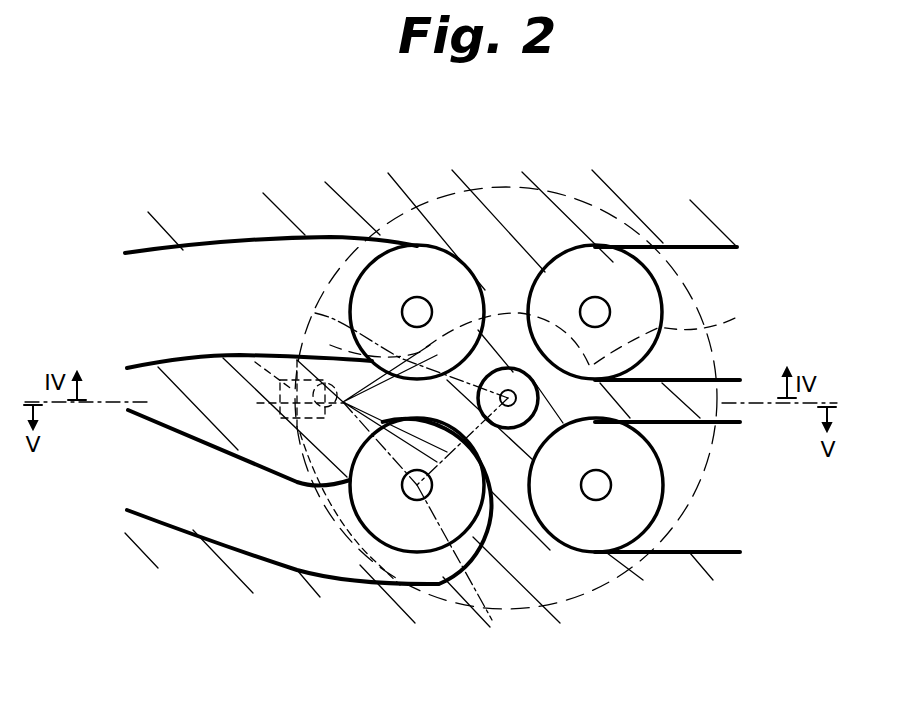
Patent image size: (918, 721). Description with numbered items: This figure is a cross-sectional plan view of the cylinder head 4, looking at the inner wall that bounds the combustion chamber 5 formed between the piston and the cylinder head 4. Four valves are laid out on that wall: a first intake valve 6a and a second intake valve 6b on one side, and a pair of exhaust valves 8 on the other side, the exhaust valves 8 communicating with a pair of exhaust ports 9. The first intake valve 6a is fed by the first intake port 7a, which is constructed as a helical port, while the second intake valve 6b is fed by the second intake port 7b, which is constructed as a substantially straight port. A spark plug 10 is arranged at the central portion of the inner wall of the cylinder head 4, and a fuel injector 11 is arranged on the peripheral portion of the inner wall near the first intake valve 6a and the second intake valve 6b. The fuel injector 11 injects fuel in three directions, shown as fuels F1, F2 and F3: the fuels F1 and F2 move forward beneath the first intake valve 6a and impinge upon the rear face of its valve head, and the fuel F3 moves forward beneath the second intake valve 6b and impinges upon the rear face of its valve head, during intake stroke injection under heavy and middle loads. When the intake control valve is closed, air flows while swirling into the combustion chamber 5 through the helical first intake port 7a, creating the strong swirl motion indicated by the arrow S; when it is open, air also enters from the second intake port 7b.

The cylinder head 4 is at (650, 222).
The combustion chamber 5 is at (458, 195).
The first intake valve 6a is at (428, 540).
The second intake valve 6b is at (418, 262).
The first intake port 7a is at (230, 525).
The second intake port 7b is at (237, 265).
The exhaust valves 8 is at (595, 265).
The exhaust ports 9 is at (700, 268).
The spark plug 10 is at (508, 370).
The fuel injector 11 is at (255, 360).
The swirl motion S is at (539, 336).
The fuel F1 is at (377, 460).
The fuel F2 is at (485, 622).
The fuel F3 is at (315, 313).